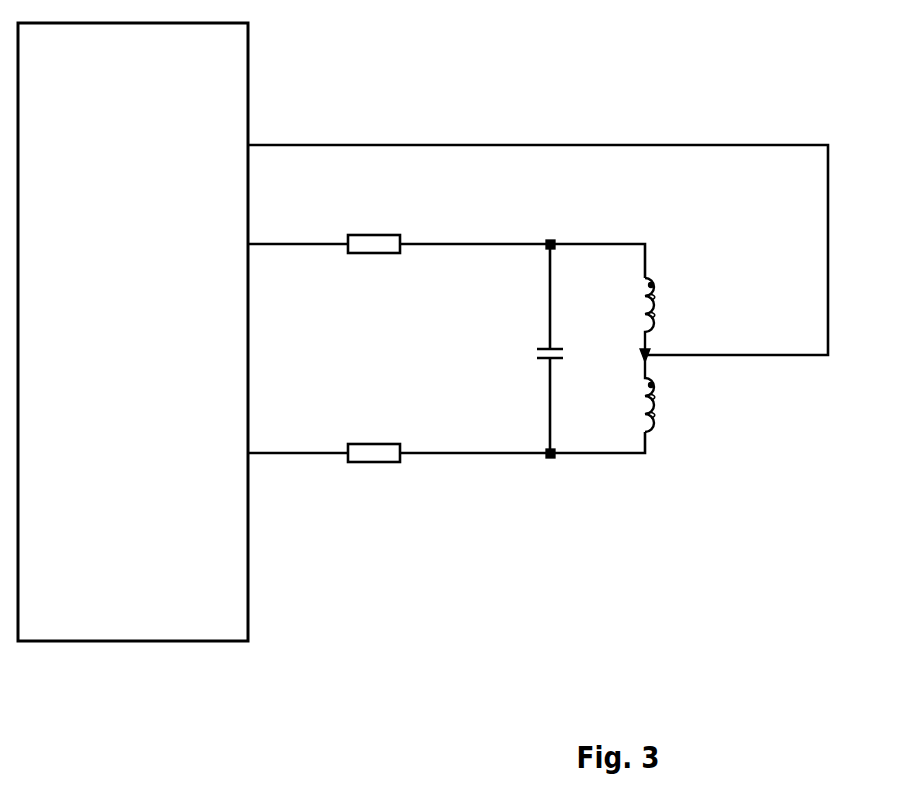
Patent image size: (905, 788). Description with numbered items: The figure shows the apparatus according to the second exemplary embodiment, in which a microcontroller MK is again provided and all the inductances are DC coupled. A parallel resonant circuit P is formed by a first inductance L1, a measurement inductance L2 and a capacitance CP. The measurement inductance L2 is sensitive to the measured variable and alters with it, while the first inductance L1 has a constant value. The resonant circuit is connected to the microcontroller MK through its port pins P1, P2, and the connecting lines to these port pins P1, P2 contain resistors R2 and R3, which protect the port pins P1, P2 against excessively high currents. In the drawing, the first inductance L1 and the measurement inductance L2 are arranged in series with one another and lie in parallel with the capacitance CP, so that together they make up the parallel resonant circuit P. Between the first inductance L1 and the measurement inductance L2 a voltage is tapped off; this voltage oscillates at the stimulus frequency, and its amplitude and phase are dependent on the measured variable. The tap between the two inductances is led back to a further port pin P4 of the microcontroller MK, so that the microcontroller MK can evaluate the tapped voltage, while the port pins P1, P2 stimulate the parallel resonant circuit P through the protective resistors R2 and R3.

The microcontroller MK is at (133, 332).
The port pin P4 is at (538, 238).
The port pin P1 is at (447, 249).
The port pin P2 is at (447, 441).
The resistor R2 is at (374, 233).
The resistor R3 is at (374, 442).
The capacitance CP is at (538, 349).
The first inductance L1 is at (627, 390).
The measurement inductance L2 is at (627, 316).
The parallel resonant circuit P is at (622, 493).